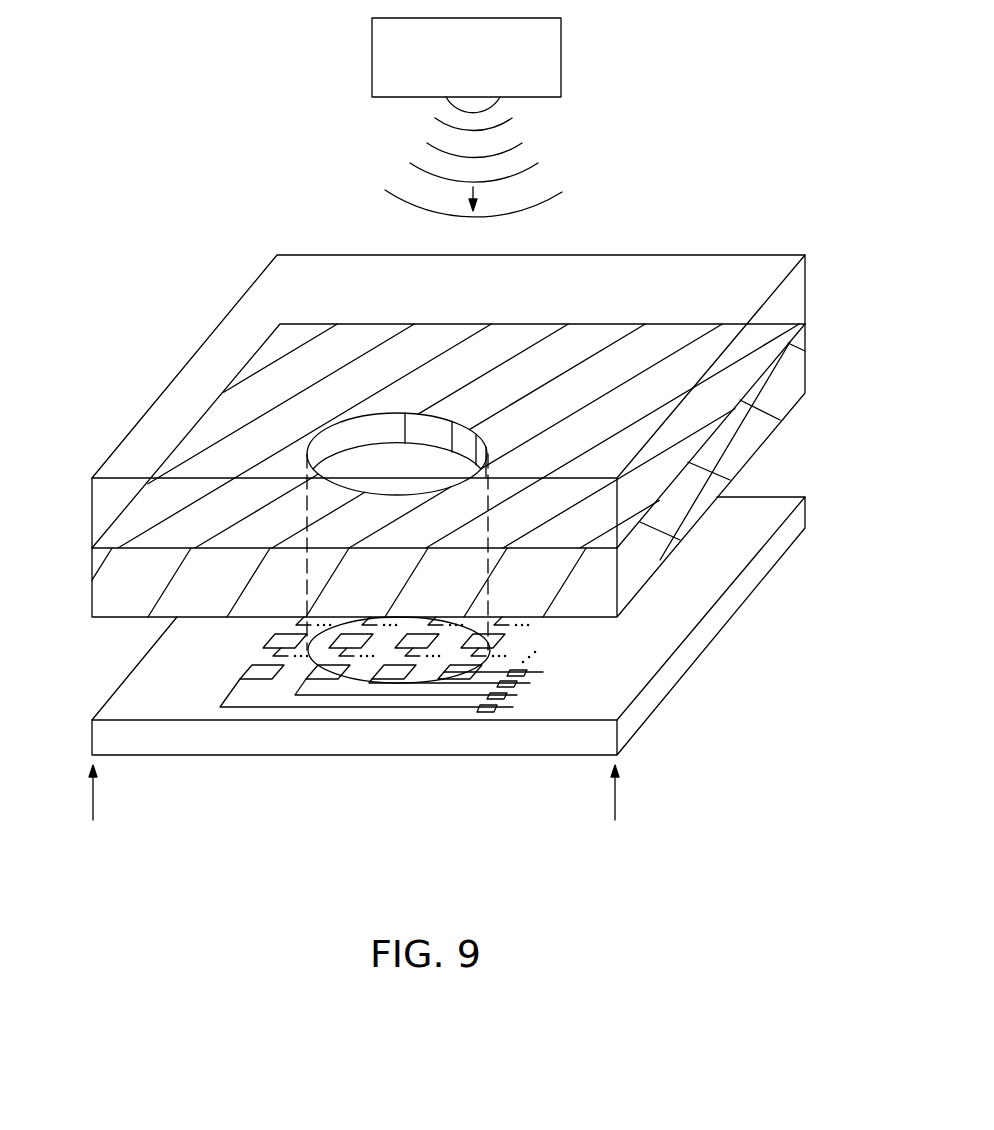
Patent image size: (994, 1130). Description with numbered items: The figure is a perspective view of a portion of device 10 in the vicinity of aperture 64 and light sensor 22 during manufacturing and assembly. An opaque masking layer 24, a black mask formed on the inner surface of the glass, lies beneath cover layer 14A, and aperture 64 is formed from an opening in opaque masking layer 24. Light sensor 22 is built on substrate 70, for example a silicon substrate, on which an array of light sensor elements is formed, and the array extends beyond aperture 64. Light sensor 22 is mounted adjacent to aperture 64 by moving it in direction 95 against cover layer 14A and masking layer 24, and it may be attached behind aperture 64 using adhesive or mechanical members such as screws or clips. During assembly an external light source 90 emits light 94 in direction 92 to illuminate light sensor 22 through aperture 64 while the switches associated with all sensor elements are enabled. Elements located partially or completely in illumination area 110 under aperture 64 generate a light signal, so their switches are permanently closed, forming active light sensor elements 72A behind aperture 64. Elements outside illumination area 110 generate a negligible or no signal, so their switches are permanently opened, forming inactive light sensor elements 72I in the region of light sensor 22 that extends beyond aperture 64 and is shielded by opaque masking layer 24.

The device 10 is at (753, 130).
The cover layer 14A is at (795, 292).
The light sensor 22 is at (66, 718).
The opaque masking layer 24 is at (793, 367).
The aperture 64 is at (380, 460).
The substrate 70 is at (707, 626).
The active light sensor elements 72A is at (393, 676).
The inactive light sensor elements 72I is at (252, 668).
The light source 90 is at (553, 50).
The direction 92 is at (476, 192).
The light 94 is at (510, 148).
The direction 95 is at (95, 793).
The illumination area 110 is at (429, 668).